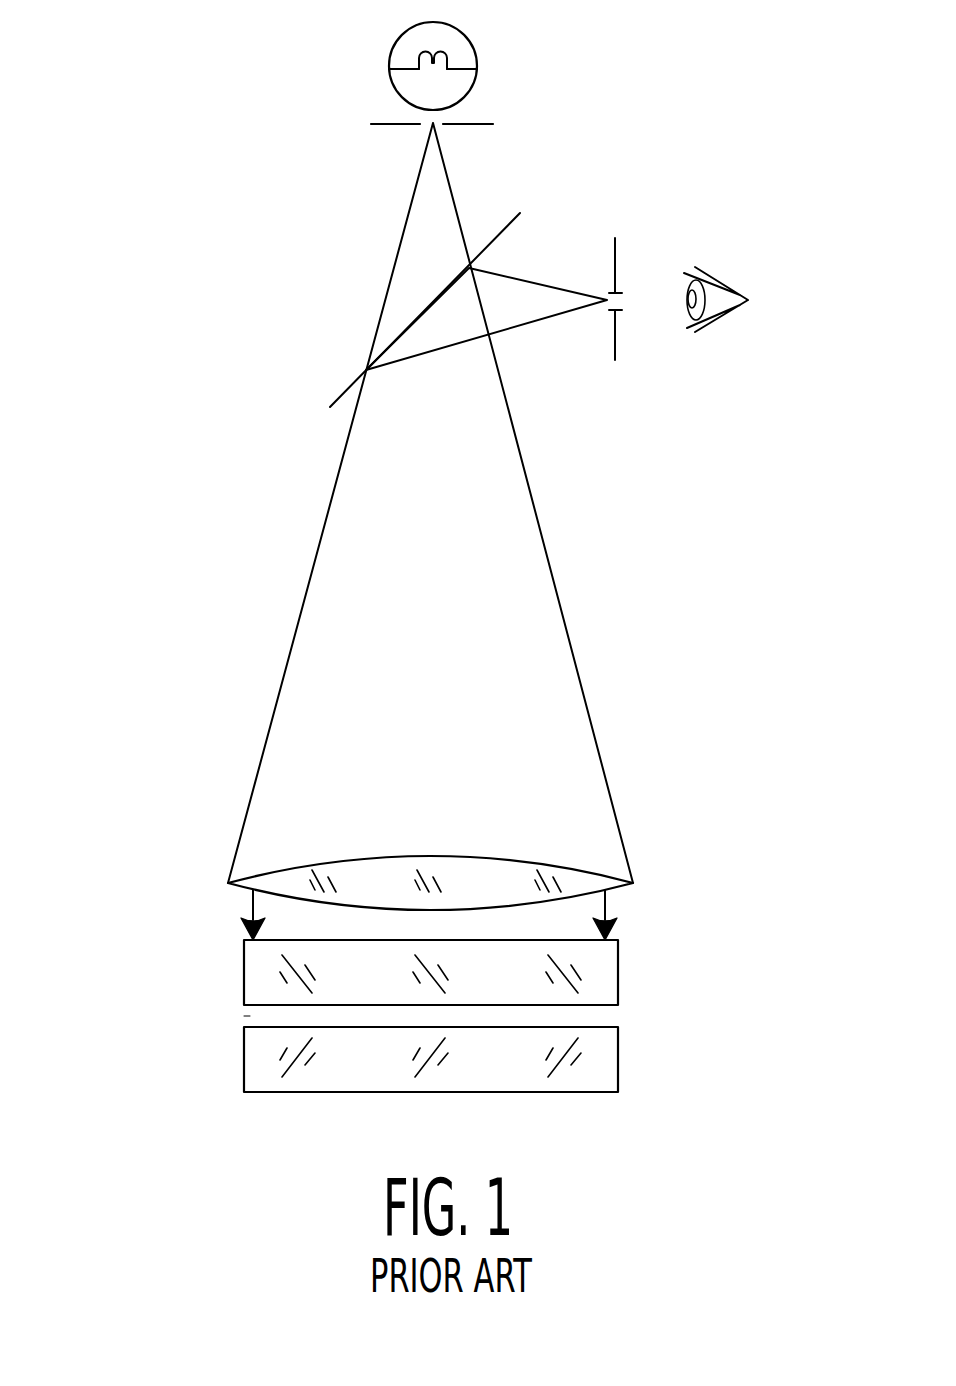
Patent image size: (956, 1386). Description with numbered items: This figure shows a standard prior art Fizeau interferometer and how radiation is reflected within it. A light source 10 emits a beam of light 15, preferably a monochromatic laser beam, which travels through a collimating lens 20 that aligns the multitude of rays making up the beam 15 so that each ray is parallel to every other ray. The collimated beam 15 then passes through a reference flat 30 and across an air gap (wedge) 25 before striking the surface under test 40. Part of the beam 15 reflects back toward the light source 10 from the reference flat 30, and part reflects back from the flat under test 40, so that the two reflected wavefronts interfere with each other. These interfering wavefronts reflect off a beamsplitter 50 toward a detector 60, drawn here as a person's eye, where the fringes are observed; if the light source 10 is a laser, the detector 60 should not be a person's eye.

The light source 10 is at (467, 33).
The beam of light 15 is at (330, 502).
The collimating lens 20 is at (634, 884).
The air gap (wedge) 25 is at (252, 1016).
The reference flat 30 is at (612, 1008).
The surface under test 40 is at (586, 1022).
The beamsplitter 50 is at (500, 233).
The detector 60 is at (720, 318).